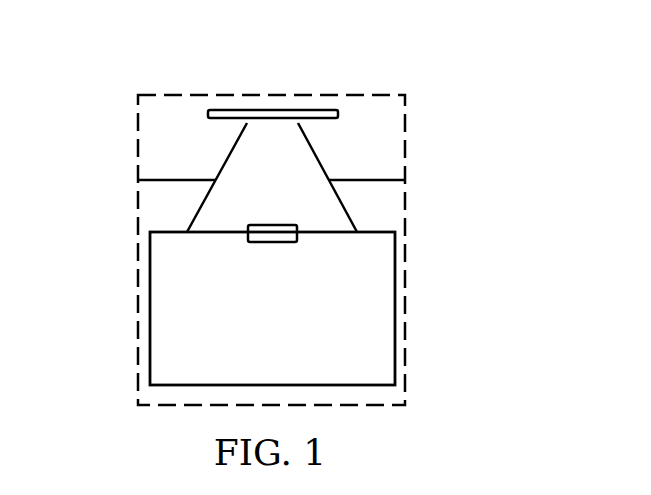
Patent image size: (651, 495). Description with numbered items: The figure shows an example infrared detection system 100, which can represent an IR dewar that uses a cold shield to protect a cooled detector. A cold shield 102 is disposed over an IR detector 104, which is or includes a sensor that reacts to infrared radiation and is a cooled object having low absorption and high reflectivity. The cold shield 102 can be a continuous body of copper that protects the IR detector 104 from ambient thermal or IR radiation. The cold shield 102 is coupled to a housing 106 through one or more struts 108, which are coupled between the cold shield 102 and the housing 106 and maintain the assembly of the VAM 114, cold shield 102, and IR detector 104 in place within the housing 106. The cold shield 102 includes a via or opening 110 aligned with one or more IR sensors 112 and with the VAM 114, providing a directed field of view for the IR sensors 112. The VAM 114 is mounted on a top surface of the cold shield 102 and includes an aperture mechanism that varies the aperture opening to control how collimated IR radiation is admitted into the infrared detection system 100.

The infrared detection system 100 is at (432, 67).
The cold shield 102 is at (323, 162).
The IR detector 104 is at (150, 328).
The housing 106 is at (138, 127).
The struts 108 is at (403, 197).
The opening 110 is at (272, 128).
The IR sensors 112 is at (272, 242).
The VAM 114 is at (222, 110).